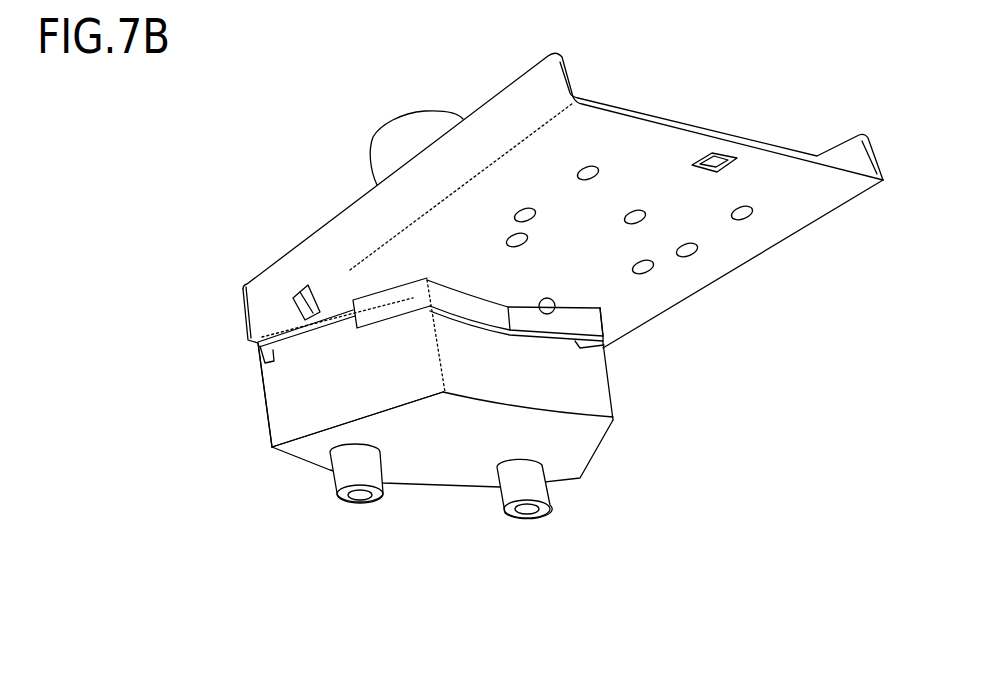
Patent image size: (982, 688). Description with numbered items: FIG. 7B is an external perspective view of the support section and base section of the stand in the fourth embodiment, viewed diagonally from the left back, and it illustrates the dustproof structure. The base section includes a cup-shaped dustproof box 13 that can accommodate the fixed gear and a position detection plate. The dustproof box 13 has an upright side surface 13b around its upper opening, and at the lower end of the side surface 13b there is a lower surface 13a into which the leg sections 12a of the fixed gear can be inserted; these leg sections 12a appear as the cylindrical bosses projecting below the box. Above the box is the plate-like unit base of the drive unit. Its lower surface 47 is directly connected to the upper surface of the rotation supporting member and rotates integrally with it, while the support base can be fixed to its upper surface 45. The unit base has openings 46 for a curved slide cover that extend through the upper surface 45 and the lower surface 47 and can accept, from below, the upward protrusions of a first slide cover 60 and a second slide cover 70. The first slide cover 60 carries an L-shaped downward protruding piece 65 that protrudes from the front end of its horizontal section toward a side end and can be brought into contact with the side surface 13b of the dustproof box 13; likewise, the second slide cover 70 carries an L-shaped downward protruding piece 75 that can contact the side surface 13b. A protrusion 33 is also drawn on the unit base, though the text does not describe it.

The leg sections 12a is at (507, 513).
The dustproof box 13 is at (283, 465).
The lower surface 13a is at (567, 452).
The side surface 13b is at (290, 405).
The protrusion 33 is at (400, 135).
The upper surface 45 is at (665, 148).
The openings 46 is at (297, 298).
The lower surface 47 is at (700, 213).
The first slide cover 60 is at (296, 344).
The downward protruding piece 65 is at (380, 303).
The second slide cover 70 is at (575, 343).
The downward protruding piece 75 is at (590, 323).